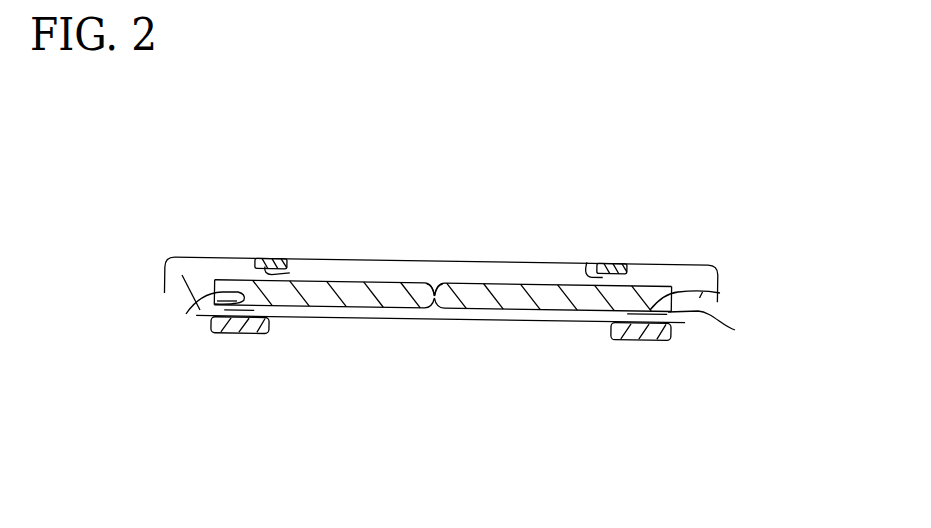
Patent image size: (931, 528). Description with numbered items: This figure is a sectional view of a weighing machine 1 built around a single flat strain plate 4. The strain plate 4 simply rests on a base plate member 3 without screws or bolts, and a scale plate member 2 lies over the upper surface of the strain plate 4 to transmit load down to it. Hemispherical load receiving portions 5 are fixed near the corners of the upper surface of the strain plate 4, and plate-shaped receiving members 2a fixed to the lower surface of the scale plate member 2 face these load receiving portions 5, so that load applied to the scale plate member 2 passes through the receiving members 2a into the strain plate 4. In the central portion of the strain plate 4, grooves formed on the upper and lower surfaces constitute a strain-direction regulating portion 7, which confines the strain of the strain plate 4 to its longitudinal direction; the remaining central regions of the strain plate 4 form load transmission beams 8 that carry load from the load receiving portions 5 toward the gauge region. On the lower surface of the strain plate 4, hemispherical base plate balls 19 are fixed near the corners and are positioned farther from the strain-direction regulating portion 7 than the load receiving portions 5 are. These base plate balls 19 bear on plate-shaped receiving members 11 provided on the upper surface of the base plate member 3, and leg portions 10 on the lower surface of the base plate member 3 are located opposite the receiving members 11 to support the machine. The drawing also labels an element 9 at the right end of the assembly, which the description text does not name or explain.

The weighing machine 1 is at (495, 210).
The scale plate member 2 is at (167, 257).
The receiving member 2a is at (265, 258).
The base plate member 3 is at (337, 320).
The strain plate 4 is at (380, 290).
The load receiving portion 5 is at (292, 260).
The strain-direction regulating portion 7 is at (432, 283).
The load transmission beam 8 is at (392, 313).
The lead 9 is at (720, 293).
The leg portion 10 is at (652, 342).
The receiving member 11 is at (735, 330).
The base plate ball 19 is at (193, 312).